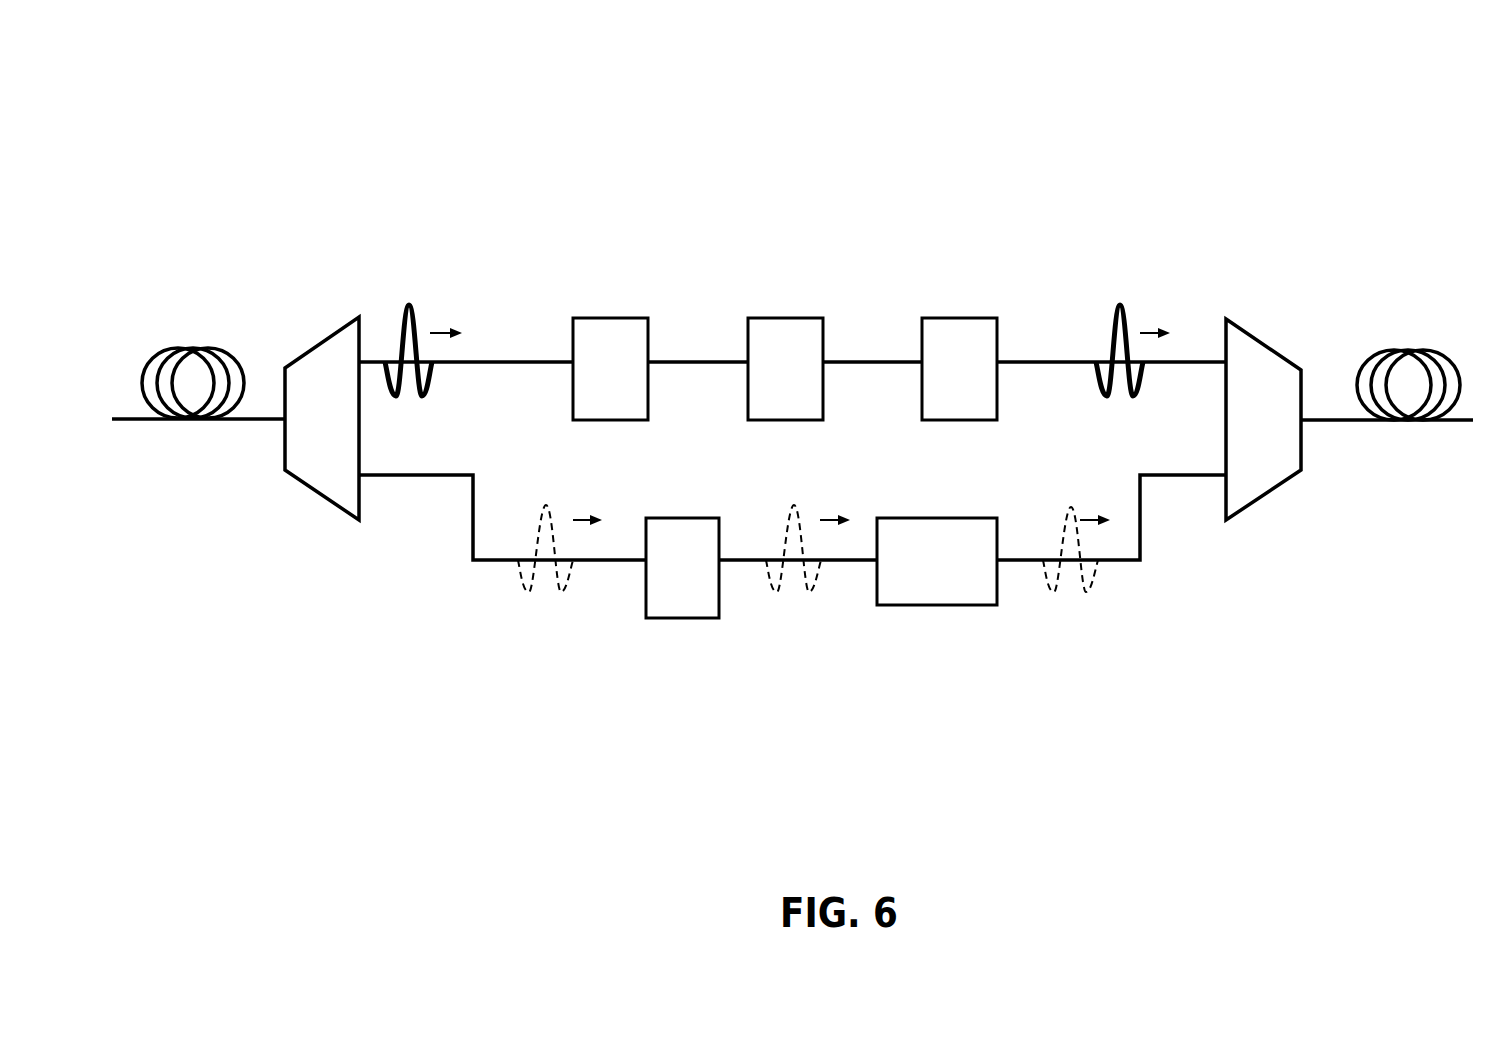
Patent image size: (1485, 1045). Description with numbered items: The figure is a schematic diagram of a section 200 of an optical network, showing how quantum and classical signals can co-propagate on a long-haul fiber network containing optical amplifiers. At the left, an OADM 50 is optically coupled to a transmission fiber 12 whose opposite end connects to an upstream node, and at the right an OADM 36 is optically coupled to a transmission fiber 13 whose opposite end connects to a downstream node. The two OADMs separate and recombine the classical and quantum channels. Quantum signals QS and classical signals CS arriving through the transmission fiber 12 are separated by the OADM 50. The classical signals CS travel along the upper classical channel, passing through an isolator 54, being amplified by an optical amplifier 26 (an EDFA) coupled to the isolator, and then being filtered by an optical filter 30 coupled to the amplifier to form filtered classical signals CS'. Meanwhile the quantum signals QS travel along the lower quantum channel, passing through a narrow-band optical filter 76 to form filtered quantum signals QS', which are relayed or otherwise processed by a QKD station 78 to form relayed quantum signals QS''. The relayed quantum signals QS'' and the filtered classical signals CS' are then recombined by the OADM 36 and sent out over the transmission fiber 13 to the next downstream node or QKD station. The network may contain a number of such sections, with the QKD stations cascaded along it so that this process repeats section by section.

The network section 200 is at (1171, 125).
The transmission fiber 12 is at (145, 420).
The transmission fiber 13 is at (1362, 421).
The OADM 50 is at (302, 436).
The OADM 36 is at (1285, 437).
The isolator 54 is at (591, 388).
The optical amplifier 26 is at (766, 388).
The optical filter 30 is at (939, 388).
The optical filter 76 is at (663, 587).
The QKD station 78 is at (917, 578).
The classical signals CS is at (444, 299).
The filtered classical signals CS' is at (1159, 300).
The quantum signals QS is at (547, 511).
The filtered quantum signals QS' is at (786, 520).
The relayed quantum signals QS'' is at (1047, 511).